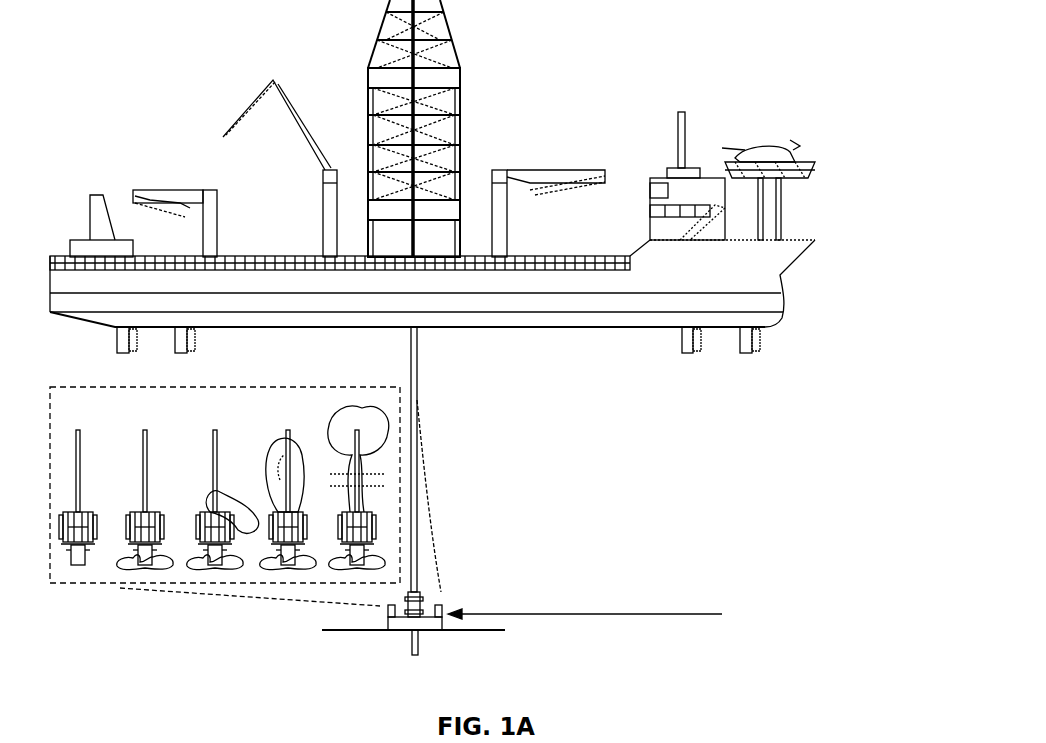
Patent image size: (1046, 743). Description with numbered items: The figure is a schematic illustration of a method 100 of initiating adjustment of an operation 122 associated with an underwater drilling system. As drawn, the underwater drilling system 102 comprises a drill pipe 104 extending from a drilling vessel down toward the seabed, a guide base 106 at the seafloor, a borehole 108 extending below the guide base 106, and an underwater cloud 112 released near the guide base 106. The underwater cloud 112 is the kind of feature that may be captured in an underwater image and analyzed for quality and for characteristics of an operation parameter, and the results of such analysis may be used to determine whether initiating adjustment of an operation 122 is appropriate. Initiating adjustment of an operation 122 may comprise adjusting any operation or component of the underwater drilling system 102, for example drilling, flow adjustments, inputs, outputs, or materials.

The method 100 is at (912, 135).
The underwater drilling system 102 is at (321, 620).
The drill pipe 104 is at (443, 590).
The guide base 106 is at (84, 562).
The borehole 108 is at (410, 638).
The underwater cloud 112 is at (286, 452).
The operation 122 is at (637, 618).